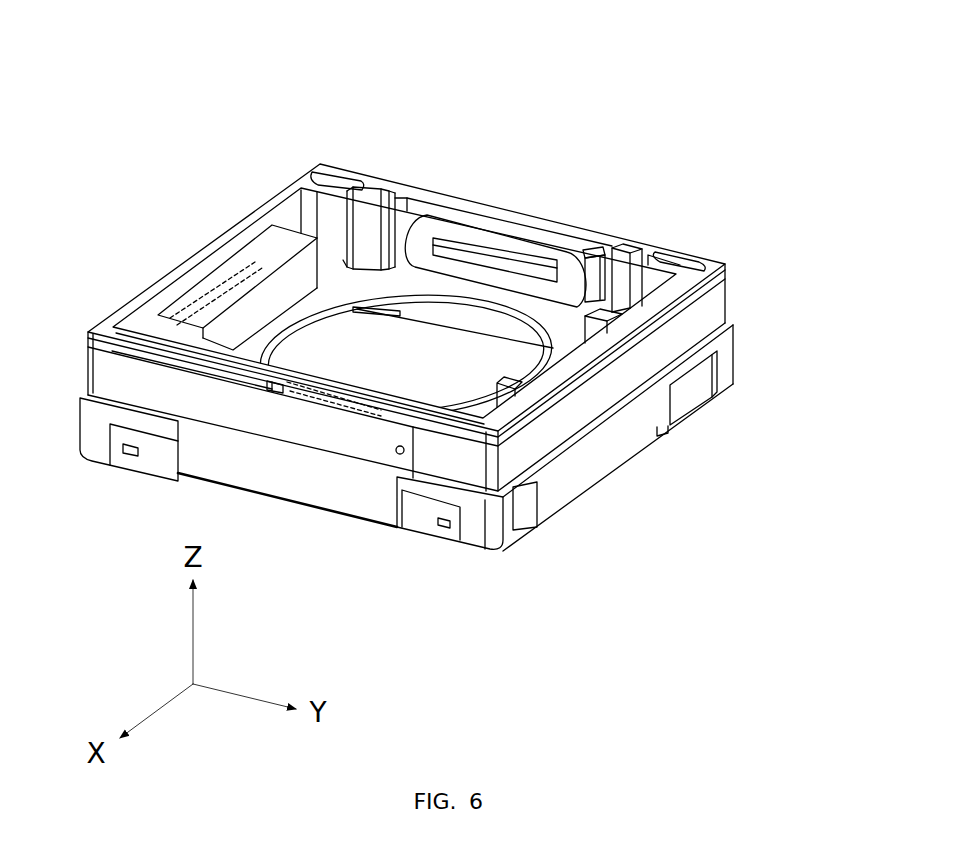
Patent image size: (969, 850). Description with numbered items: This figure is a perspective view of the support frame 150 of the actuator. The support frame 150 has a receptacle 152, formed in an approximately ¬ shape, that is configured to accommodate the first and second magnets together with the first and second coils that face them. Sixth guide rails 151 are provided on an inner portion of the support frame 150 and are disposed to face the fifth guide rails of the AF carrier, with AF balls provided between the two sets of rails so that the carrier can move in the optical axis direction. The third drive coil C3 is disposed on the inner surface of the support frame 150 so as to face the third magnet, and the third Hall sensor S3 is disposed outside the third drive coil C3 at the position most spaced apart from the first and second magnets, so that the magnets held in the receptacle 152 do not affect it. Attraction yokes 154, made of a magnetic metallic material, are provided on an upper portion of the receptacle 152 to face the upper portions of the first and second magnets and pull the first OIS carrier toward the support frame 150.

The support frame 150 is at (662, 120).
The sixth guide rails 151 is at (380, 190).
The receptacle 152 is at (270, 243).
The attraction yokes 154 is at (219, 278).
The third drive coil C3 is at (489, 238).
The third Hall sensor S3 is at (584, 258).